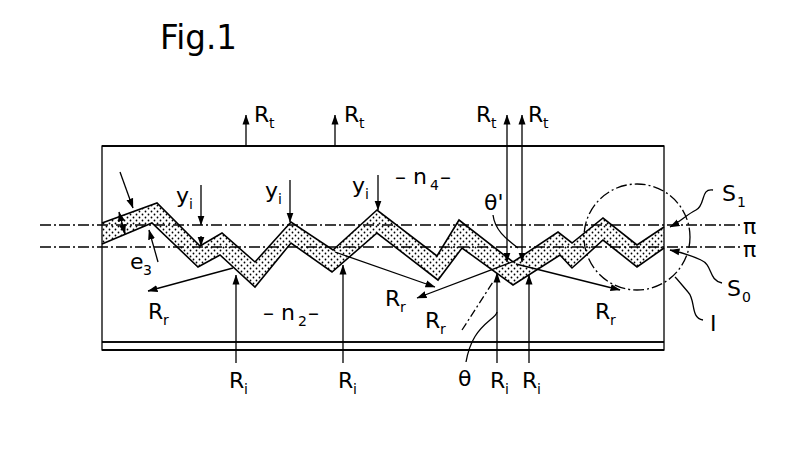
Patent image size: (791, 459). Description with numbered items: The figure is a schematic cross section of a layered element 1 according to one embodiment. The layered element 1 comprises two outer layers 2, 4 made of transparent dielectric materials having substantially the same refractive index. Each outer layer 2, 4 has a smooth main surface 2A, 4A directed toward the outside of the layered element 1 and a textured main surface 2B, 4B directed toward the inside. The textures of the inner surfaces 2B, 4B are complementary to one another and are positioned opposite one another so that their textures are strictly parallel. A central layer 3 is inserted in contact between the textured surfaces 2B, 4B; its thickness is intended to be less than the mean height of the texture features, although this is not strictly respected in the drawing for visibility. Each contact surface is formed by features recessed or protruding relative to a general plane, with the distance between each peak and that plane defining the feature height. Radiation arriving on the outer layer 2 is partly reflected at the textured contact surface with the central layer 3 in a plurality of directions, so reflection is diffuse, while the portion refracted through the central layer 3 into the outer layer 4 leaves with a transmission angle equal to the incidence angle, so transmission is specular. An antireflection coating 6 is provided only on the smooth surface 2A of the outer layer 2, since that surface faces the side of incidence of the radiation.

The layered element 1 is at (583, 70).
The outer layer 2 is at (660, 330).
The smooth main surface 2A is at (122, 348).
The textured main surface 2B is at (120, 220).
The central layer 3 is at (623, 228).
The outer layer 4 is at (625, 160).
The smooth main surface 4A is at (128, 146).
The textured main surface 4B is at (115, 245).
The antireflection coating 6 is at (632, 352).